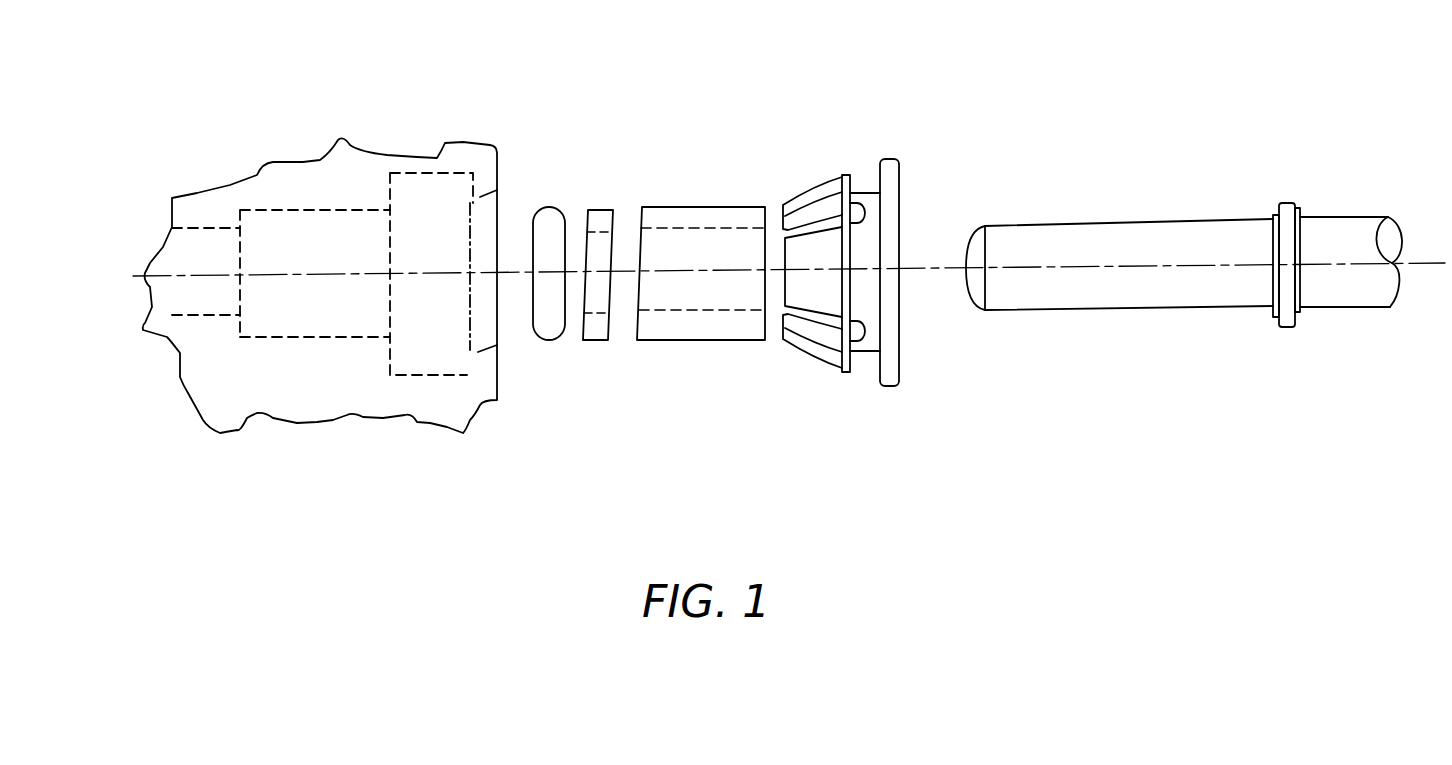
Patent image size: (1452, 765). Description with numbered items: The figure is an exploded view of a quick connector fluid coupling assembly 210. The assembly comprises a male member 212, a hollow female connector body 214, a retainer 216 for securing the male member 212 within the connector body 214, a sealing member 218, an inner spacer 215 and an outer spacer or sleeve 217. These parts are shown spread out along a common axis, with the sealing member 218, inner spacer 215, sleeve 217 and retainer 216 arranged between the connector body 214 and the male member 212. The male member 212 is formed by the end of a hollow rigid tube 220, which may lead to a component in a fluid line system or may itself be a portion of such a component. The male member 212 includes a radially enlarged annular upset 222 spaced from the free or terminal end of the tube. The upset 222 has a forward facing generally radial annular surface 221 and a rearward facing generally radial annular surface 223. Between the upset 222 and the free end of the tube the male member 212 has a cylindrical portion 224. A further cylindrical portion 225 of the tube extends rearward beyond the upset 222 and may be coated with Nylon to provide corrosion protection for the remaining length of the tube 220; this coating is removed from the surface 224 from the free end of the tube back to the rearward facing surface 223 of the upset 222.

The quick connector fluid coupling assembly 210 is at (958, 88).
The hollow female connector body 214 is at (367, 142).
The sealing member 218 is at (552, 218).
The inner spacer 215 is at (596, 210).
The outer spacer or sleeve 217 is at (705, 180).
The retainer 216 is at (842, 172).
The male member 212 is at (1167, 220).
The cylindrical portion 224 is at (1083, 243).
The forward facing generally radial annular surface 221 is at (1273, 318).
The radially enlarged annular upset 222 is at (1287, 203).
The rearward facing generally radial annular surface 223 is at (1328, 217).
The cylindrical portion 225 is at (1331, 214).
The hollow rigid tube 220 is at (1362, 227).